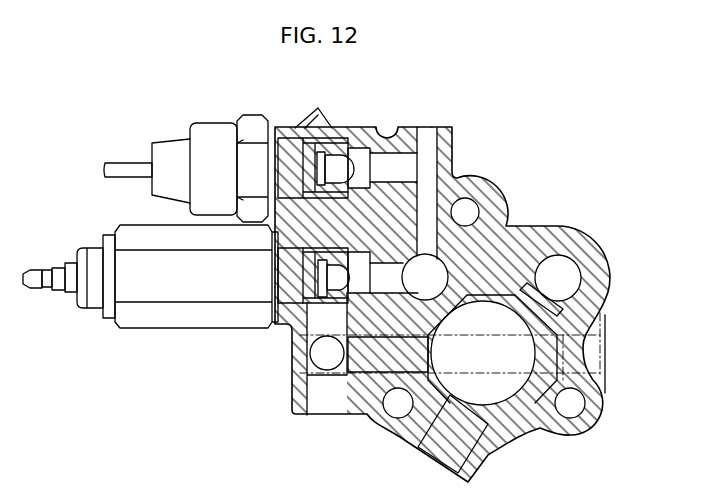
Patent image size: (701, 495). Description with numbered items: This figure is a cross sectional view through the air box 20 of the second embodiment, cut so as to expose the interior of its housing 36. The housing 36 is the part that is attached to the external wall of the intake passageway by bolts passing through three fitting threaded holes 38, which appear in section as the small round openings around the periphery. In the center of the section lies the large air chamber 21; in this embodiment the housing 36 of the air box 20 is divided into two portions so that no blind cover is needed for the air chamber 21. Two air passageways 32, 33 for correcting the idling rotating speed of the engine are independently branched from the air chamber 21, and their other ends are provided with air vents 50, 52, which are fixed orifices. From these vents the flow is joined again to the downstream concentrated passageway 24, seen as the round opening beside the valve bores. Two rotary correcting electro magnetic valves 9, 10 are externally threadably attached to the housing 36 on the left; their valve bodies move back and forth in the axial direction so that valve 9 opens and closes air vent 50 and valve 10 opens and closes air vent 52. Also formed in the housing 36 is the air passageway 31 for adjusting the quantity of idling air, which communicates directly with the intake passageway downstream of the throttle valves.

The rotary correcting electro magnetic valve 9 is at (203, 187).
The rotary correcting electro magnetic valve 10 is at (152, 320).
The air box 20 is at (557, 215).
The air chamber 21 is at (500, 365).
The concentrated passageway 24 is at (440, 233).
The air passageway 31 is at (573, 275).
The air passageway 32 is at (380, 205).
The air passageway 33 is at (318, 325).
The housing 36 is at (597, 290).
The fitting threaded hole 38 is at (476, 212).
The air vent 50 is at (355, 153).
The air vent 52 is at (365, 378).